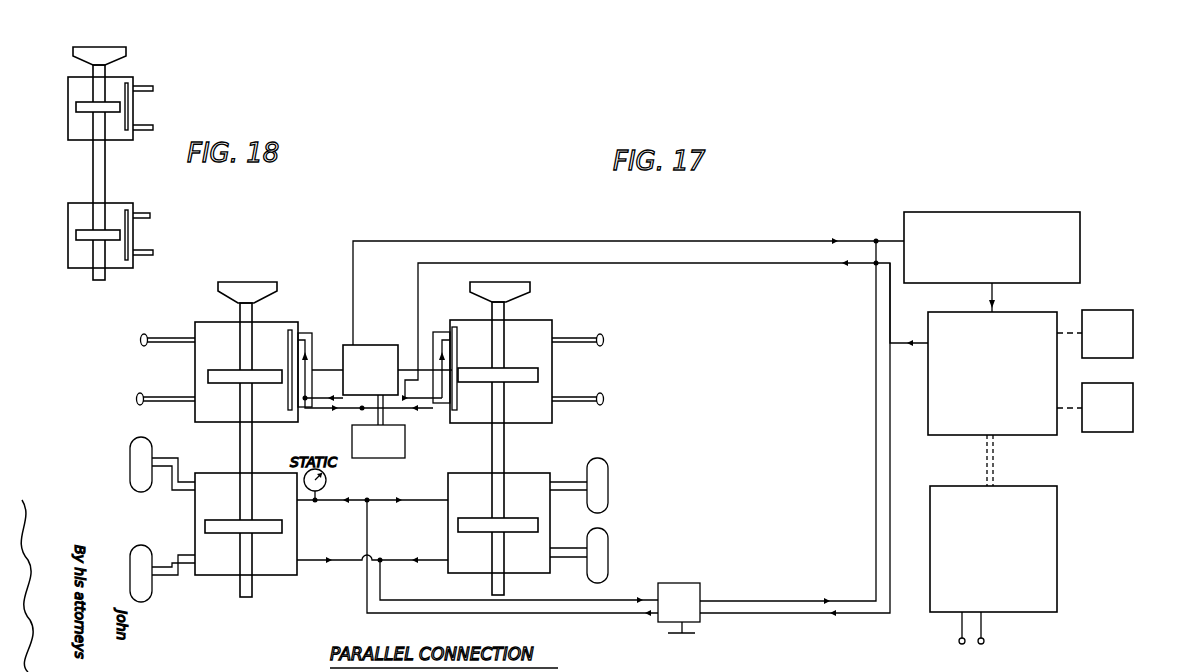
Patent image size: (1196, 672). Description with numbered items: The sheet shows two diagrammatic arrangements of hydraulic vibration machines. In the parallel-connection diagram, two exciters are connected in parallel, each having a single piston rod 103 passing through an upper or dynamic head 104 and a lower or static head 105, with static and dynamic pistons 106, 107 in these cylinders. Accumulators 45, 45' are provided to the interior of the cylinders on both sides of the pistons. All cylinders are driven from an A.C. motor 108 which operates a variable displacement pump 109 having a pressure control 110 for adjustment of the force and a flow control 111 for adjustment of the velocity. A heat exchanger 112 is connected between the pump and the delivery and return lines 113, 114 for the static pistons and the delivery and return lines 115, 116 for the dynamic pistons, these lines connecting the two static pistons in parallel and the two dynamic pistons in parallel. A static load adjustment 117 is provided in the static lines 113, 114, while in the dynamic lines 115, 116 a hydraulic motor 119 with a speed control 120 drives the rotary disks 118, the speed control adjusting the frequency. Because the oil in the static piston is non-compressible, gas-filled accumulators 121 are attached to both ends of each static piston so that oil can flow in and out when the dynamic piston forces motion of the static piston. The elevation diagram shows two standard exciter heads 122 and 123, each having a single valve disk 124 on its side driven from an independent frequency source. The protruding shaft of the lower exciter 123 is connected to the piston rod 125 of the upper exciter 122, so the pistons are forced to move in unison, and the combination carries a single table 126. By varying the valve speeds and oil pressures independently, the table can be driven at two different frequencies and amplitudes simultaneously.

In FIG. 17, the accumulator 45 is at (374, 328).
In FIG. 17, the accumulator 45' is at (370, 410).
In FIG. 17, the piston rod 103 is at (243, 338).
In FIG. 17, the dynamic head 104 is at (569, 383).
In FIG. 17, the static head 105 is at (553, 527).
In FIG. 17, the static piston 106 is at (223, 380).
In FIG. 17, the dynamic piston 107 is at (228, 532).
In FIG. 17, the A.C. motor 108 is at (1057, 533).
In FIG. 17, the variable displacement pump 109 is at (1045, 435).
In FIG. 17, the pressure control 110 is at (1133, 415).
In FIG. 17, the flow control 111 is at (1133, 345).
In FIG. 17, the heat exchanger 112 is at (1082, 248).
In FIG. 17, the delivery line 113 is at (890, 490).
In FIG. 17, the return line 114 is at (876, 470).
In FIG. 17, the delivery line 115 is at (742, 265).
In FIG. 17, the return line 116 is at (702, 241).
In FIG. 17, the static load adjustment 117 is at (698, 624).
In FIG. 17, the rotary disk 118 is at (288, 410).
In FIG. 17, the hydraulic motor 119 is at (343, 345).
In FIG. 17, the speed control 120 is at (405, 445).
In FIG. 17, the accumulator 121 is at (127, 570).
In FIG. 18, the upper exciter head 122 is at (78, 88).
In FIG. 18, the lower exciter head 123 is at (80, 215).
In FIG. 18, the valve disk 124 is at (133, 83).
In FIG. 18, the piston rod 125 is at (100, 172).
In FIG. 18, the table 126 is at (123, 52).